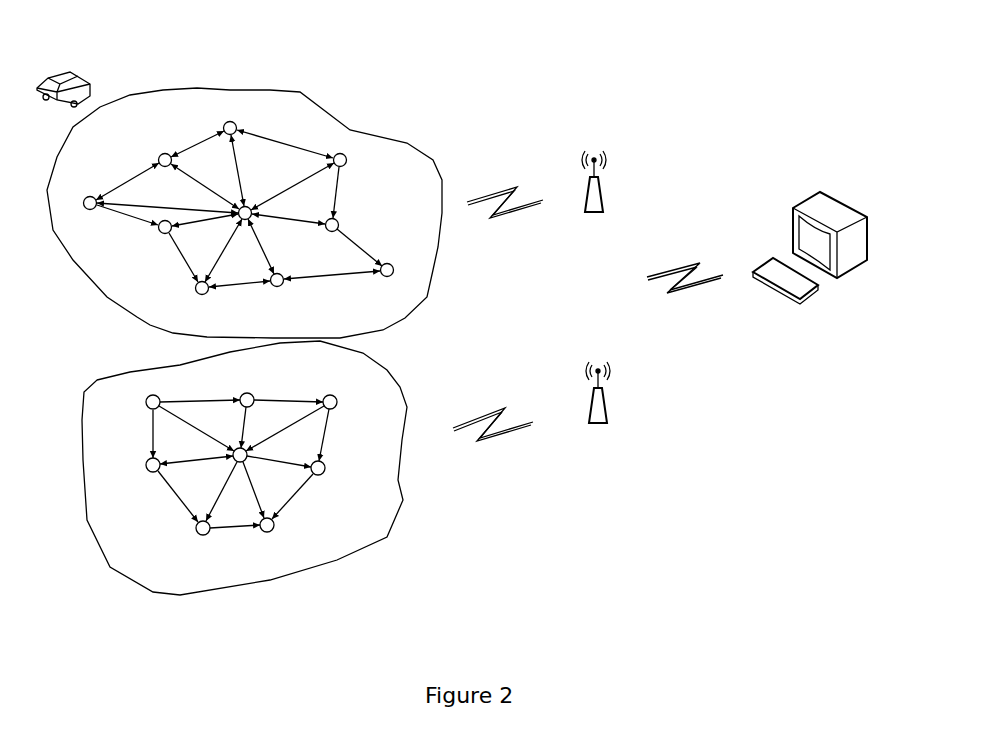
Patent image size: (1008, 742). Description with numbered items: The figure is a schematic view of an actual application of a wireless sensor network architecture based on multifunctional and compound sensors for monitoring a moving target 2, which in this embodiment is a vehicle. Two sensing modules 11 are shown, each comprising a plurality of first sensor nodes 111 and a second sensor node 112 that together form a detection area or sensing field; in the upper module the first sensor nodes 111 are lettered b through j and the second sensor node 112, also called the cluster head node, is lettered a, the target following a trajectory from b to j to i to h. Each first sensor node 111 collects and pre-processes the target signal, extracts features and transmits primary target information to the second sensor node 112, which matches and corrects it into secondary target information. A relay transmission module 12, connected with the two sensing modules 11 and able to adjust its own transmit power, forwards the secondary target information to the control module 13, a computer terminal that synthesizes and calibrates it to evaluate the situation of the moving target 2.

The moving target 2 is at (76, 72).
The sensing module 11 is at (265, 90).
The relay transmission module 12 is at (600, 178).
The control module 13 is at (845, 210).
The first sensor node 111 is at (226, 121).
The second sensor node 112 is at (262, 195).